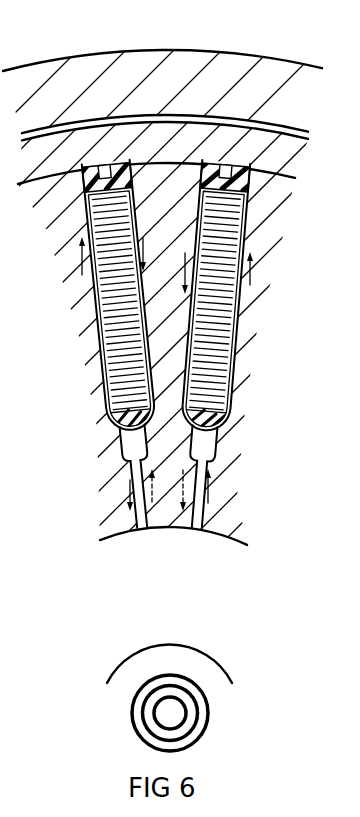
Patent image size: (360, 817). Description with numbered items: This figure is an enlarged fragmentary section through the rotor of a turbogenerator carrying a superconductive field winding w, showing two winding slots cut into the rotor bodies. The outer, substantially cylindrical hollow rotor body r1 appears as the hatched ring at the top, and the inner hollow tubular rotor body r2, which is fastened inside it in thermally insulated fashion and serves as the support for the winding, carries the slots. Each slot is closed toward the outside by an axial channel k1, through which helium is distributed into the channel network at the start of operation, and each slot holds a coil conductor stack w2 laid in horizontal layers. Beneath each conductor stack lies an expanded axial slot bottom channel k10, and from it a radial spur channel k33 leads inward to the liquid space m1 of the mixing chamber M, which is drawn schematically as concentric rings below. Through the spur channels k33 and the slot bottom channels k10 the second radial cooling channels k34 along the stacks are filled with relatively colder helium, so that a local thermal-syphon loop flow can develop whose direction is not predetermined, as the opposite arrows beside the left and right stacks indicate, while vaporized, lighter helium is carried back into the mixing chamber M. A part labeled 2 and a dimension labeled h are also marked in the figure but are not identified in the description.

The outer rotor body r1 is at (50, 92).
The inner rotor body r2 is at (44, 173).
The stator core 2 is at (281, 132).
The axial channel k1 is at (104, 172).
The slot depth h is at (82, 256).
The field winding w is at (112, 283).
The second radial cooling channels k34 is at (95, 315).
The coil conductor stack w2 is at (218, 325).
The axial slot bottom channel k10 is at (123, 450).
The radial spur channel k33 is at (137, 518).
The liquid space m1 is at (193, 587).
The mixing chamber M is at (145, 623).